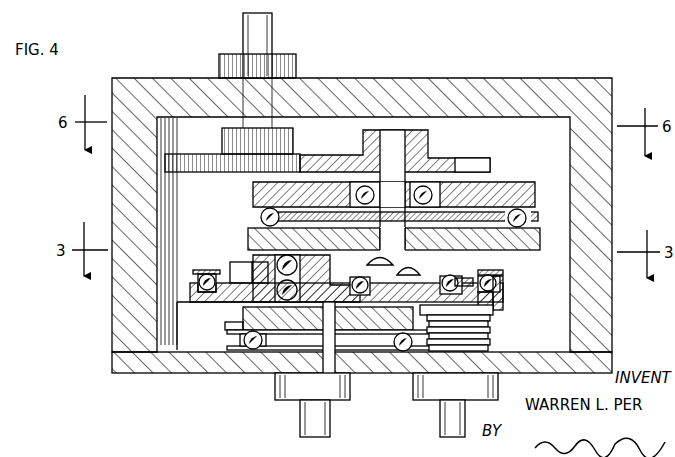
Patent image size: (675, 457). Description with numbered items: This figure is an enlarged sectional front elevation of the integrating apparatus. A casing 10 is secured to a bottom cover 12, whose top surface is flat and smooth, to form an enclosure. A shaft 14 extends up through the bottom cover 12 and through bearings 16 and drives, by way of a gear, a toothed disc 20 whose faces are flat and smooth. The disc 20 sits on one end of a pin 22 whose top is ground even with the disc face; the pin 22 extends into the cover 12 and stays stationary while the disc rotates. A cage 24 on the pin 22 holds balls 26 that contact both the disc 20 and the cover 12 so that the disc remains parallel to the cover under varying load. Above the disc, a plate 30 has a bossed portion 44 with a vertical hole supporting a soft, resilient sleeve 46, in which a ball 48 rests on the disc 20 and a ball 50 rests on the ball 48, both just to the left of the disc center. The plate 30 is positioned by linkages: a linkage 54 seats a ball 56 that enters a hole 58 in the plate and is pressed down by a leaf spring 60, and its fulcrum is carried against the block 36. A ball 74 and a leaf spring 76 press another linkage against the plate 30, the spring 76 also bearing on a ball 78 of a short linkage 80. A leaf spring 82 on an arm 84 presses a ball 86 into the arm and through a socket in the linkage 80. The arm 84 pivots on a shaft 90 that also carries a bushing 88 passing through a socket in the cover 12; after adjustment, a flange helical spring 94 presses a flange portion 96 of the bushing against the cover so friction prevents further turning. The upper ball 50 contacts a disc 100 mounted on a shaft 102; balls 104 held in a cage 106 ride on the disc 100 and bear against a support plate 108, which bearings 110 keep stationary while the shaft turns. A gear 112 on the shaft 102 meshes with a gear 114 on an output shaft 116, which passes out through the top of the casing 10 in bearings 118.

The casing 10 is at (605, 304).
The bottom cover 12 is at (612, 362).
The shaft 14 is at (301, 430).
The bearings 16 is at (292, 393).
The toothed disc 20 is at (222, 350).
The pin 22 is at (336, 362).
The cage 24 is at (244, 346).
The balls 26 is at (254, 350).
The plate 30 is at (195, 292).
The block 36 is at (185, 332).
The bossed portion 44 is at (258, 270).
The sleeve 46 is at (262, 258).
The ball 48 is at (236, 272).
The ball 50 is at (275, 262).
The linkage 54 is at (202, 285).
The ball 56 is at (200, 279).
The hole 58 is at (208, 303).
The leaf spring 60 is at (205, 270).
The ball 74 is at (401, 352).
The leaf spring 76 is at (447, 281).
The ball 78 is at (460, 280).
The linkage 80 is at (503, 290).
The leaf spring 82 is at (488, 278).
The arm 84 is at (503, 304).
The ball 86 is at (500, 278).
The bushing 88 is at (493, 312).
The shaft 90 is at (442, 430).
The flange helical spring 94 is at (490, 337).
The flange portion 96 is at (430, 397).
The disc 100 is at (535, 237).
The shaft 102 is at (412, 147).
The balls 104 is at (530, 212).
The cage 106 is at (262, 214).
The support plate 108 is at (517, 182).
The bearings 110 is at (362, 188).
The gear 112 is at (480, 158).
The gear 114 is at (216, 164).
The output shaft 116 is at (272, 38).
The bearings 118 is at (296, 66).